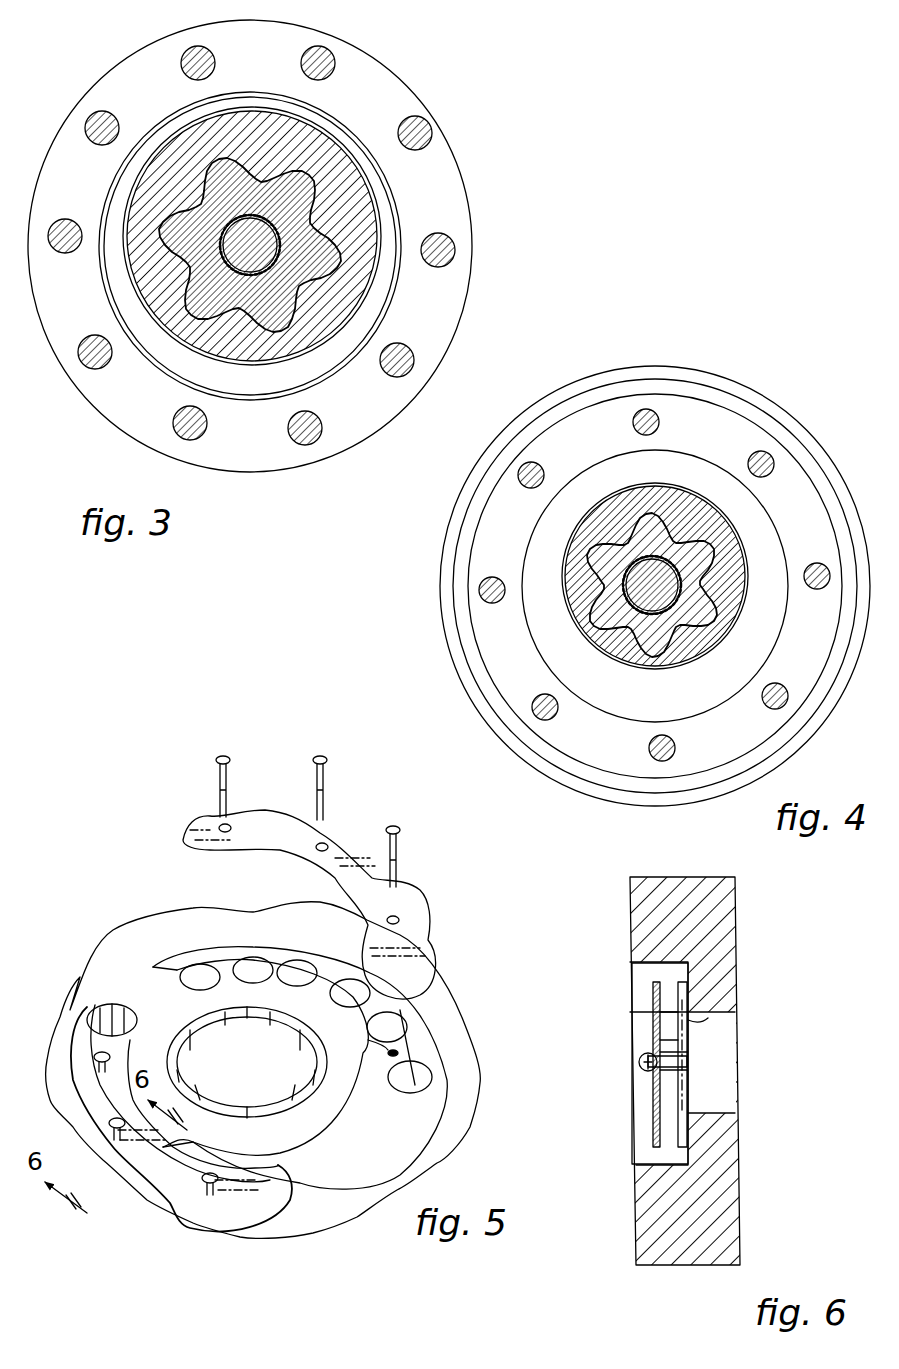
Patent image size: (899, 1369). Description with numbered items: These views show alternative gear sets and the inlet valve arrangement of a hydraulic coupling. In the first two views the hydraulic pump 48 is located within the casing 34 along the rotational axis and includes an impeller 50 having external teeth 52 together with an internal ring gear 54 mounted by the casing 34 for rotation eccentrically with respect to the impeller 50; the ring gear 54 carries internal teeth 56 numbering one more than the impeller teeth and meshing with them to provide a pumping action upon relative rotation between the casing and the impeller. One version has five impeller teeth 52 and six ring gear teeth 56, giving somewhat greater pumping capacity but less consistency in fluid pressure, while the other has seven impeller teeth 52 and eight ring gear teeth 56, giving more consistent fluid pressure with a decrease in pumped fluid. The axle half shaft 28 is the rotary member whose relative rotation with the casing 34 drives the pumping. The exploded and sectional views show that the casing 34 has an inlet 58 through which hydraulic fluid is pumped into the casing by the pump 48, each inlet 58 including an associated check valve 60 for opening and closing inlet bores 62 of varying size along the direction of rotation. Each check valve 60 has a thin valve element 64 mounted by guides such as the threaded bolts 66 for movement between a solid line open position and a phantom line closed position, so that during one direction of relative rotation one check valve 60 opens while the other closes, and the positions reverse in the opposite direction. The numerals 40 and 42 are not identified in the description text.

In FIG. 3, the axle half shaft 28 is at (257, 242).
In FIG. 4, the axle half shaft 28 is at (599, 608).
In FIG. 3, the casing 34 is at (455, 160).
In FIG. 3, the end plate 40 is at (440, 285).
In FIG. 4, the end plate 40 is at (811, 651).
In FIG. 5, the end plate 40 is at (353, 1193).
In FIG. 6, the end plate 40 is at (735, 940).
In FIG. 3, the bolt holes 42 is at (93, 117).
In FIG. 4, the bolt holes 42 is at (525, 470).
In FIG. 3, the hydraulic pump 48 is at (382, 222).
In FIG. 4, the hydraulic pump 48 is at (752, 550).
In FIG. 3, the impeller 50 is at (307, 163).
In FIG. 4, the impeller 50 is at (682, 518).
In FIG. 3, the external teeth 52 is at (273, 193).
In FIG. 4, the external teeth 52 is at (655, 522).
In FIG. 3, the internal ring gear 54 is at (252, 118).
In FIG. 4, the internal ring gear 54 is at (597, 504).
In FIG. 3, the internal teeth 56 is at (185, 135).
In FIG. 4, the internal teeth 56 is at (574, 556).
In FIG. 5, the inlet 58 is at (407, 1010).
In FIG. 6, the inlet 58 is at (735, 1030).
In FIG. 5, the check valve 60 is at (422, 868).
In FIG. 6, the check valve 60 is at (645, 992).
In FIG. 5, the inlet bores 62 is at (350, 987).
In FIG. 5, the valve element 64 is at (417, 893).
In FIG. 6, the valve element 64 is at (652, 1024).
In FIG. 5, the threaded bolts 66 is at (230, 790).
In FIG. 6, the threaded bolts 66 is at (645, 1070).